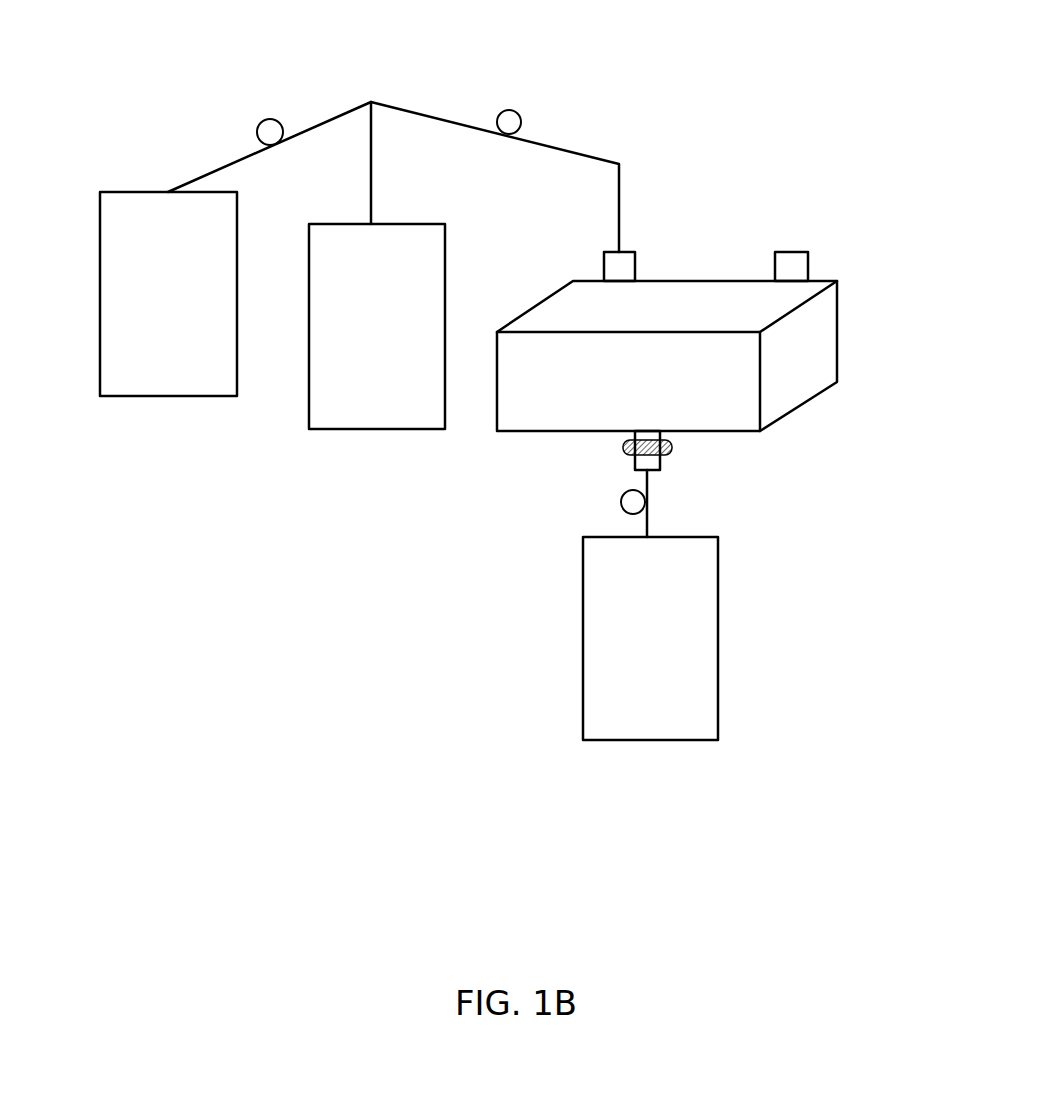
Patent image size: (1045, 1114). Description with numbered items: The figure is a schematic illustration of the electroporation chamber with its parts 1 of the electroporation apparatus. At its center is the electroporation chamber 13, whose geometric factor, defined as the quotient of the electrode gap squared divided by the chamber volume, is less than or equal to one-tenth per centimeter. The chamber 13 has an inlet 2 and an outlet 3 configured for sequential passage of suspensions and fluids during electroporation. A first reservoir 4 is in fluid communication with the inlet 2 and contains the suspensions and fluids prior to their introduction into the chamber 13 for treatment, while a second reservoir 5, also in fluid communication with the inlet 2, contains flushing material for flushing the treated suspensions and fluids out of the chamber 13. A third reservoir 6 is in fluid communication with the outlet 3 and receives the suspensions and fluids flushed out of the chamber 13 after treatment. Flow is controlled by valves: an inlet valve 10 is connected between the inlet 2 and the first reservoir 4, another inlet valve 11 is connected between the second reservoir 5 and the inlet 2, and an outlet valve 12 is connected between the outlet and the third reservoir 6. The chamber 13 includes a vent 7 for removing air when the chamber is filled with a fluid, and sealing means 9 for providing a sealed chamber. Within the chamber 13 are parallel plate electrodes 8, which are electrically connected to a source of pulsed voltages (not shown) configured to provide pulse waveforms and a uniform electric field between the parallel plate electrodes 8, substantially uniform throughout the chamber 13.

The electroporation chamber with its parts 1 is at (190, 88).
The inlet 2 is at (637, 260).
The outlet 3 is at (655, 472).
The first reservoir 4 is at (342, 430).
The second reservoir 5 is at (188, 397).
The third reservoir 6 is at (718, 592).
The vent 7 is at (808, 260).
The parallel plate electrodes 8 is at (805, 352).
The sealing means 9 is at (672, 447).
The inlet valve 10 is at (521, 118).
The inlet valve 11 is at (283, 128).
The outlet valve 12 is at (621, 502).
The electroporation chamber 13 is at (732, 281).